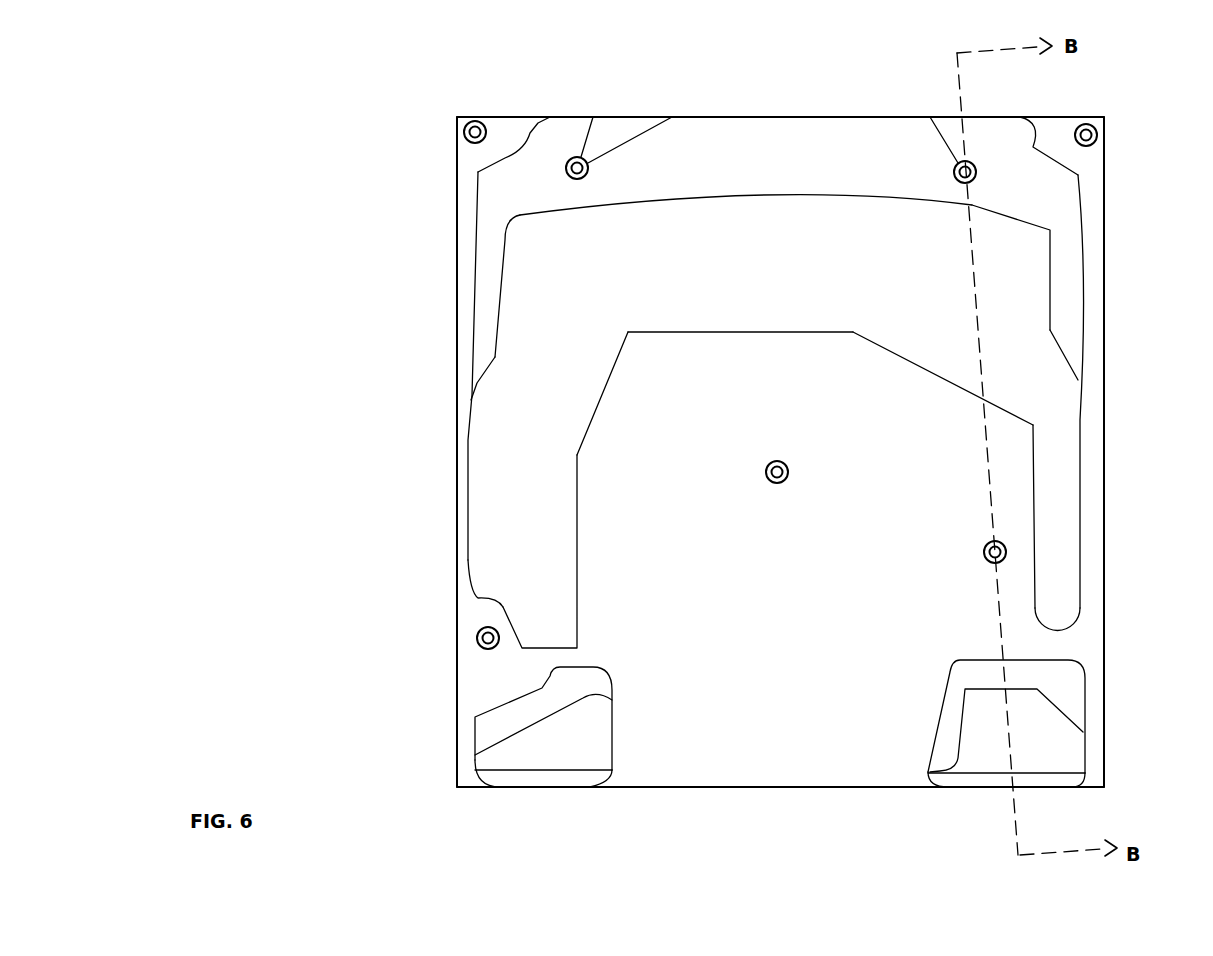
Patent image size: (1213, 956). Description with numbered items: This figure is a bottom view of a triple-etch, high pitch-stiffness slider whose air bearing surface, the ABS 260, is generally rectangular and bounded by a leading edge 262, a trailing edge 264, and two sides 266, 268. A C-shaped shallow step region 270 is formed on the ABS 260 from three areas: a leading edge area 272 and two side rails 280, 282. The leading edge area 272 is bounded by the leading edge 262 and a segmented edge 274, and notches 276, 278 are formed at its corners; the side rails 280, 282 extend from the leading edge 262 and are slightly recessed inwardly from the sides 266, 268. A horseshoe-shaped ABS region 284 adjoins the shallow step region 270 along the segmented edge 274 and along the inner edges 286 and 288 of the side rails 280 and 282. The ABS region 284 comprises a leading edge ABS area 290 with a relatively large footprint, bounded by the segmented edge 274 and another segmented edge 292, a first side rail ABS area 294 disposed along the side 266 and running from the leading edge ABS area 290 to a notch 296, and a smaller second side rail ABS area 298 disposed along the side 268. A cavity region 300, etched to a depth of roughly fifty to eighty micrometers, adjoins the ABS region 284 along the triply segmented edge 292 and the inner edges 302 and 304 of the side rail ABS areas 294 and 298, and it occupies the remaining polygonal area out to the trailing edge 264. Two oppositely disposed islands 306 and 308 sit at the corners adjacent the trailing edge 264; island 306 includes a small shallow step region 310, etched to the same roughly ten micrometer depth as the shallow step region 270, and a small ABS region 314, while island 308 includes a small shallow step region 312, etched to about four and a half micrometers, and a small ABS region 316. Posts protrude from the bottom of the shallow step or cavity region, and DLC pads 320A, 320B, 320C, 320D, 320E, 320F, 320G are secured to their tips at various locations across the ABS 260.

The ABS 260 is at (836, 84).
The leading edge 262 is at (533, 116).
The trailing edge 264 is at (805, 790).
The side 266 is at (457, 417).
The side 268 is at (1149, 452).
The shallow step region 270 is at (780, 172).
The leading edge area 272 is at (700, 147).
The segmented edge 274 is at (700, 200).
The notch 276 is at (516, 135).
The notch 278 is at (1053, 135).
The side rail 280 is at (492, 280).
The side rail 282 is at (1075, 280).
The ABS region 284 is at (803, 252).
The inner edge 286 is at (500, 295).
The inner edge 288 is at (1052, 268).
The leading edge ABS area 290 is at (776, 322).
The segmented edge 292 is at (853, 335).
The first side rail ABS area 294 is at (527, 486).
The notch 296 is at (472, 610).
The second side rail ABS area 298 is at (1043, 498).
The cavity region 300 is at (803, 624).
The inner edge 302 is at (578, 572).
The inner edge 304 is at (1035, 583).
The island 306 is at (496, 802).
The island 308 is at (1035, 799).
The shallow step region 310 is at (498, 727).
The shallow step region 312 is at (1040, 682).
The ABS region 314 is at (543, 718).
The ABS region 316 is at (1006, 716).
The DLC pad 320A is at (983, 552).
The DLC pad 320B is at (970, 160).
The DLC pad 320C is at (1104, 138).
The DLC pad 320D is at (567, 175).
The DLC pad 320E is at (460, 122).
The DLC pad 320F is at (483, 648).
The DLC pad 320G is at (770, 483).